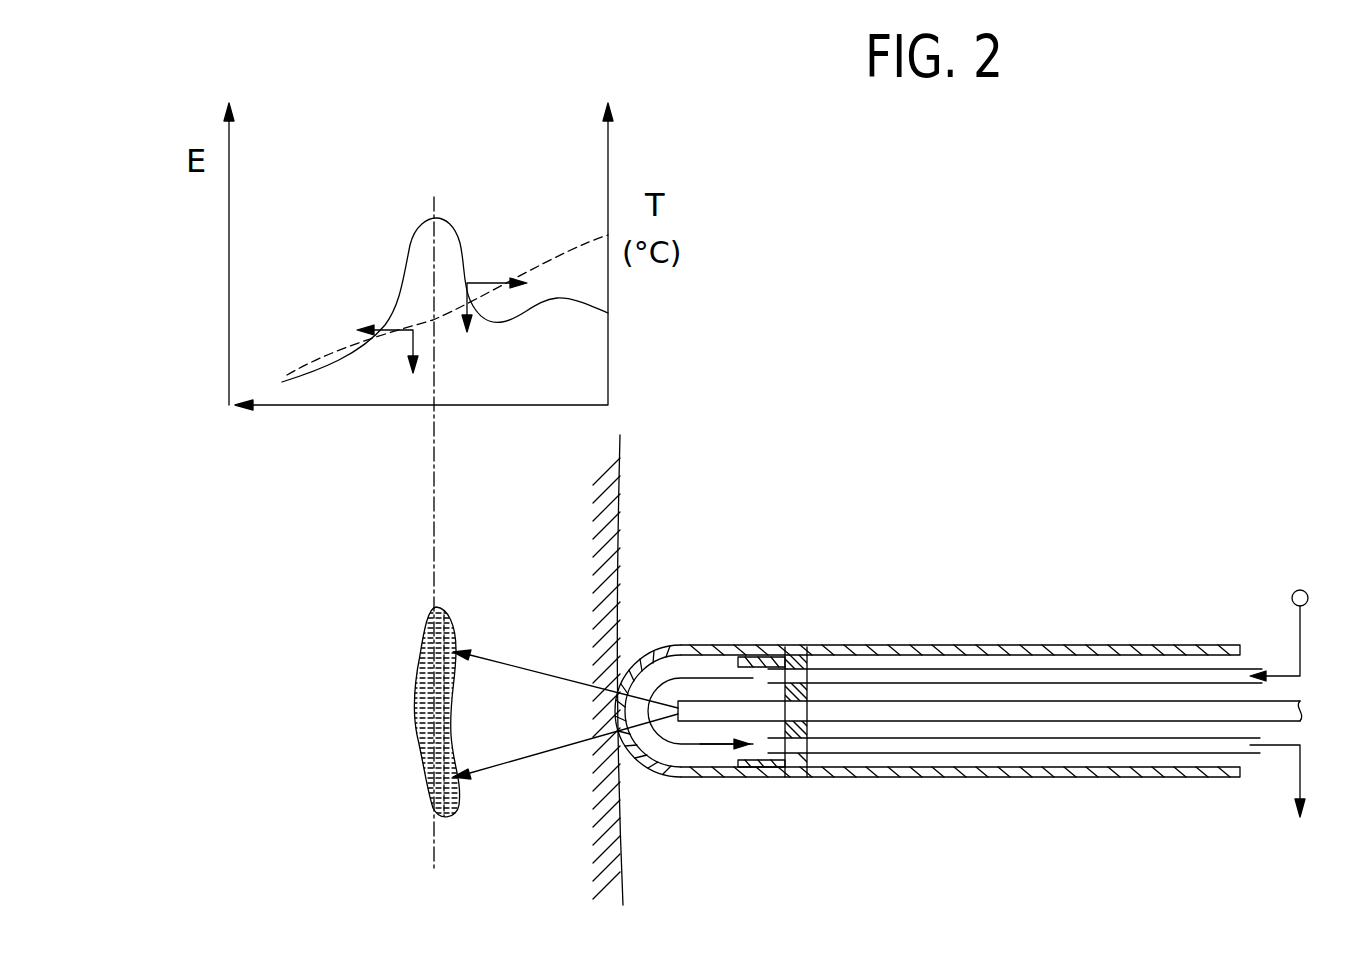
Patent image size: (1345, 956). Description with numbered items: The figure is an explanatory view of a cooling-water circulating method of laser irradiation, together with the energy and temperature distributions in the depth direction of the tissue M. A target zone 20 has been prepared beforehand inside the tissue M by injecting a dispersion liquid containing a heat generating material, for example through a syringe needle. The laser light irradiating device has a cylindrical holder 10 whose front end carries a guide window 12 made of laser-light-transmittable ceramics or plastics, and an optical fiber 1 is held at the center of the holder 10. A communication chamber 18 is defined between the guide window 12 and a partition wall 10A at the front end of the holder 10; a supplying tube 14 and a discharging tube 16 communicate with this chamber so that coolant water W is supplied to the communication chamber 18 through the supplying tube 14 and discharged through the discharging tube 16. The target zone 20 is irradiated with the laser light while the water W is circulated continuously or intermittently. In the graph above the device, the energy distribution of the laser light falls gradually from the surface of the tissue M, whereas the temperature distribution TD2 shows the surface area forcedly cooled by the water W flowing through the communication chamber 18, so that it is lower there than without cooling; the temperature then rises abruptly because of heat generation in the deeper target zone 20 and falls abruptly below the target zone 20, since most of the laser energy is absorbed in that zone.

The optical fiber 1 is at (905, 712).
The cylindrical holder 10 is at (997, 645).
The partition wall 10A is at (816, 686).
The guide window 12 is at (685, 644).
The supplying tube 14 is at (1093, 669).
The discharging tube 16 is at (1075, 753).
The communication chamber 18 is at (688, 758).
The target zone 20 is at (456, 727).
The tissue M is at (622, 870).
The water W is at (1283, 616).
The temperature distribution TD2 is at (410, 238).